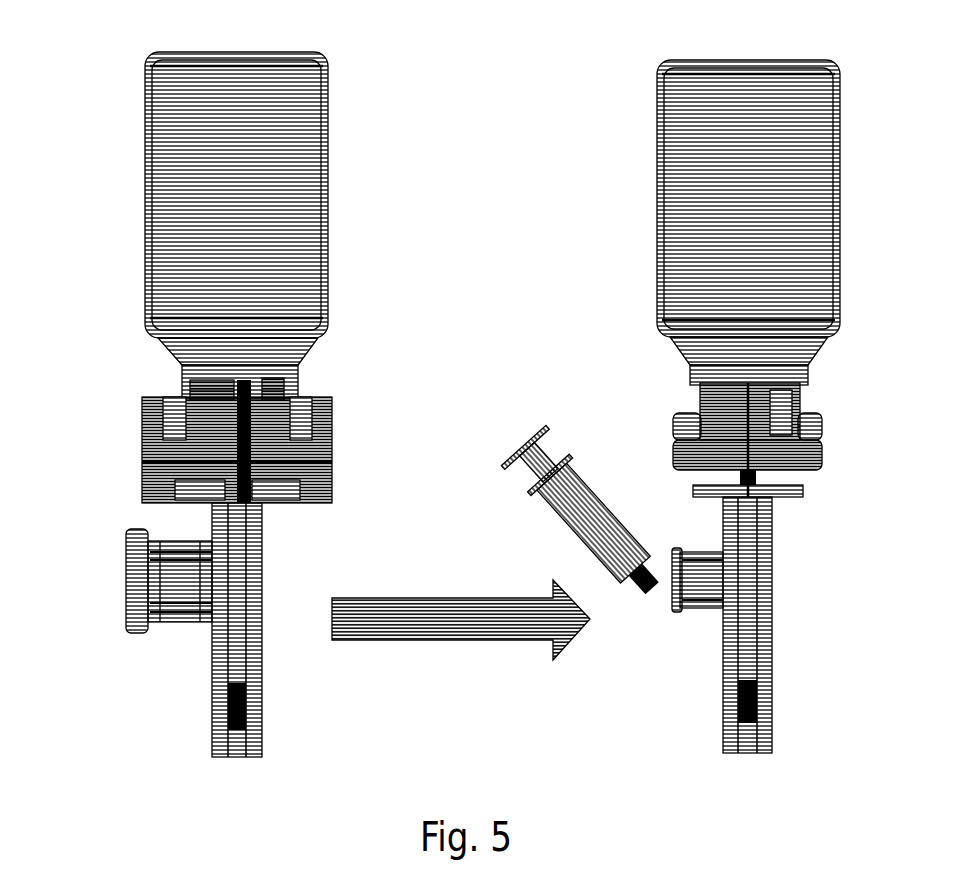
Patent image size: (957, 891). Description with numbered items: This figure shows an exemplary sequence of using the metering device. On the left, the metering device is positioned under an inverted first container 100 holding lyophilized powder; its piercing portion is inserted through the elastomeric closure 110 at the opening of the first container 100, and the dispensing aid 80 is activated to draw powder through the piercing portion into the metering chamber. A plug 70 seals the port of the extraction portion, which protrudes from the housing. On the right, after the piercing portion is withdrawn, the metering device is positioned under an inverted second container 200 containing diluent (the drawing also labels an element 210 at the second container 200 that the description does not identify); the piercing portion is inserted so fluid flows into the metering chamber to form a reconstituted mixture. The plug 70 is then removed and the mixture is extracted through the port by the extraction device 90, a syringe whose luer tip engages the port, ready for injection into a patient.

The first container 100 is at (148, 130).
The closure 110 is at (143, 422).
The dispensing aid 80 is at (118, 436).
The plug 70 is at (126, 580).
The extraction device 90 is at (514, 488).
The second container 200 is at (658, 133).
The vial adapter 210 is at (672, 427).